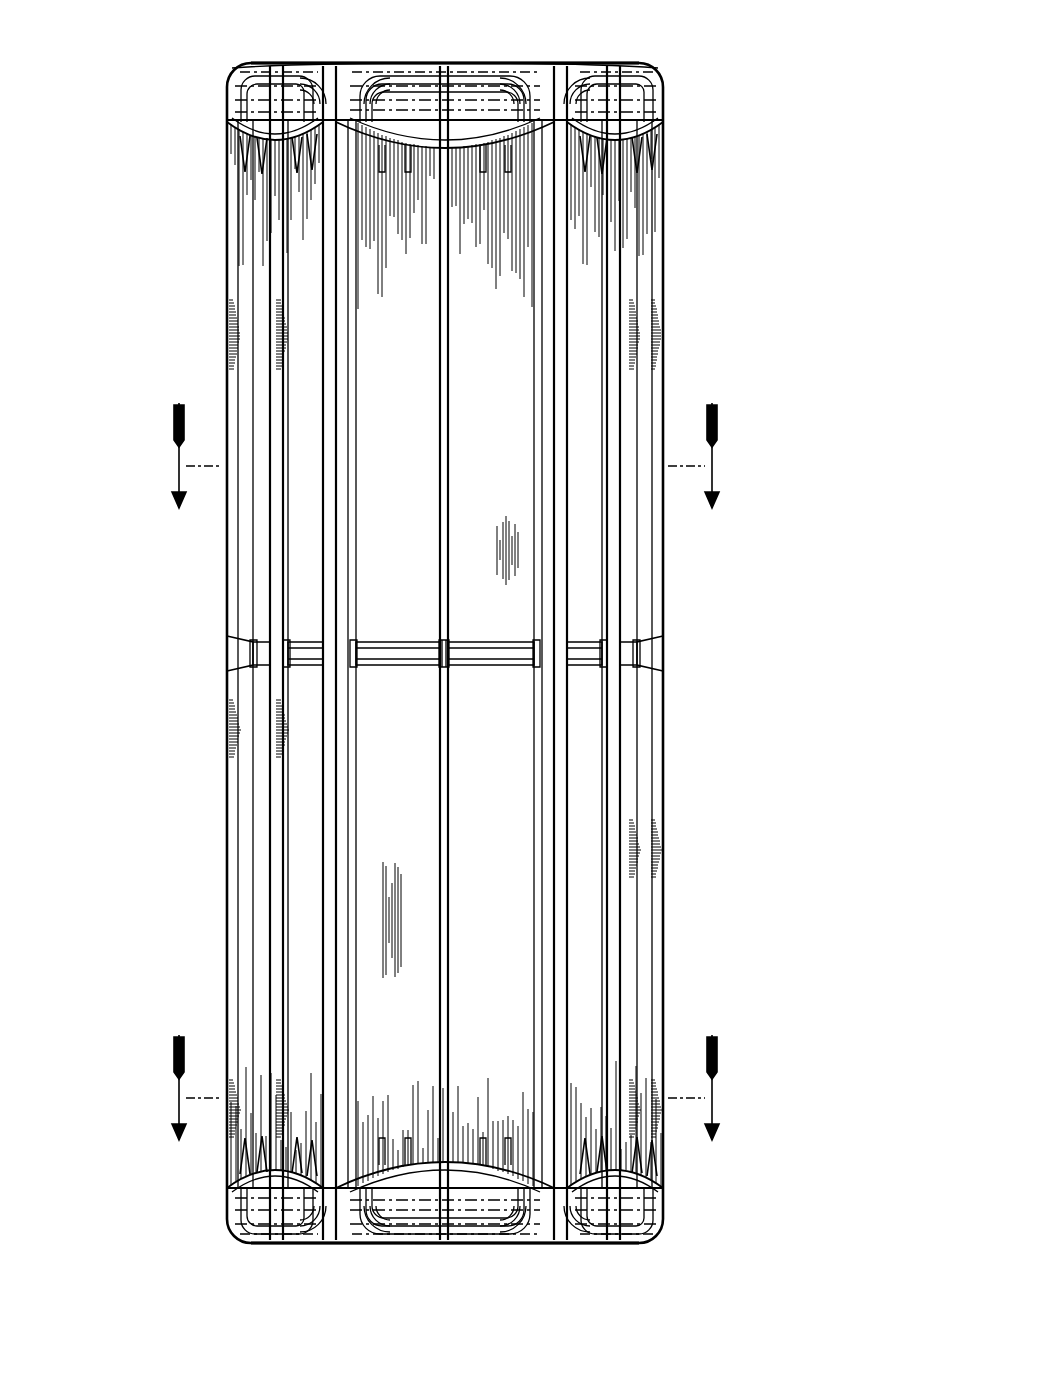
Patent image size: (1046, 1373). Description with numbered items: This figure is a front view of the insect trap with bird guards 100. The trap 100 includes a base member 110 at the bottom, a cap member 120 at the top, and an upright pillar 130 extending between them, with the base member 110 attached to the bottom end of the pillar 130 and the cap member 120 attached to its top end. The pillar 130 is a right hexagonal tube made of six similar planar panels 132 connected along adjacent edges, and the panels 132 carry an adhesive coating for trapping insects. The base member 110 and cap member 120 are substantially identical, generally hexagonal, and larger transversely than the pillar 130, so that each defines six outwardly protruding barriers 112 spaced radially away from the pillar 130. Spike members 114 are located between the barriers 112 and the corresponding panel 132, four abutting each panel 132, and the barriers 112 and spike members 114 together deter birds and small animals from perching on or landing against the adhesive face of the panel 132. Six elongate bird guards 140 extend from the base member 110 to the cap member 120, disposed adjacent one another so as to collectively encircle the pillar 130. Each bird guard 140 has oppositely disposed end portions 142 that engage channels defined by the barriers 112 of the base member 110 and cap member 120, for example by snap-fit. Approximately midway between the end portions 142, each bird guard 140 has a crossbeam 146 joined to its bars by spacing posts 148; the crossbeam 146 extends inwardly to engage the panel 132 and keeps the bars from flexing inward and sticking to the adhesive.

The insect trap with bird guards 100 is at (762, 80).
The base member 110 is at (610, 1246).
The barriers 112 is at (232, 98).
The spike members 114 is at (640, 160).
The cap member 120 is at (556, 60).
The pillar 130 is at (588, 215).
The planar panels 132 is at (303, 272).
The bird guards 140 is at (664, 802).
The end portions 142 is at (290, 74).
The crossbeam 146 is at (520, 640).
The spacing posts 148 is at (240, 645).